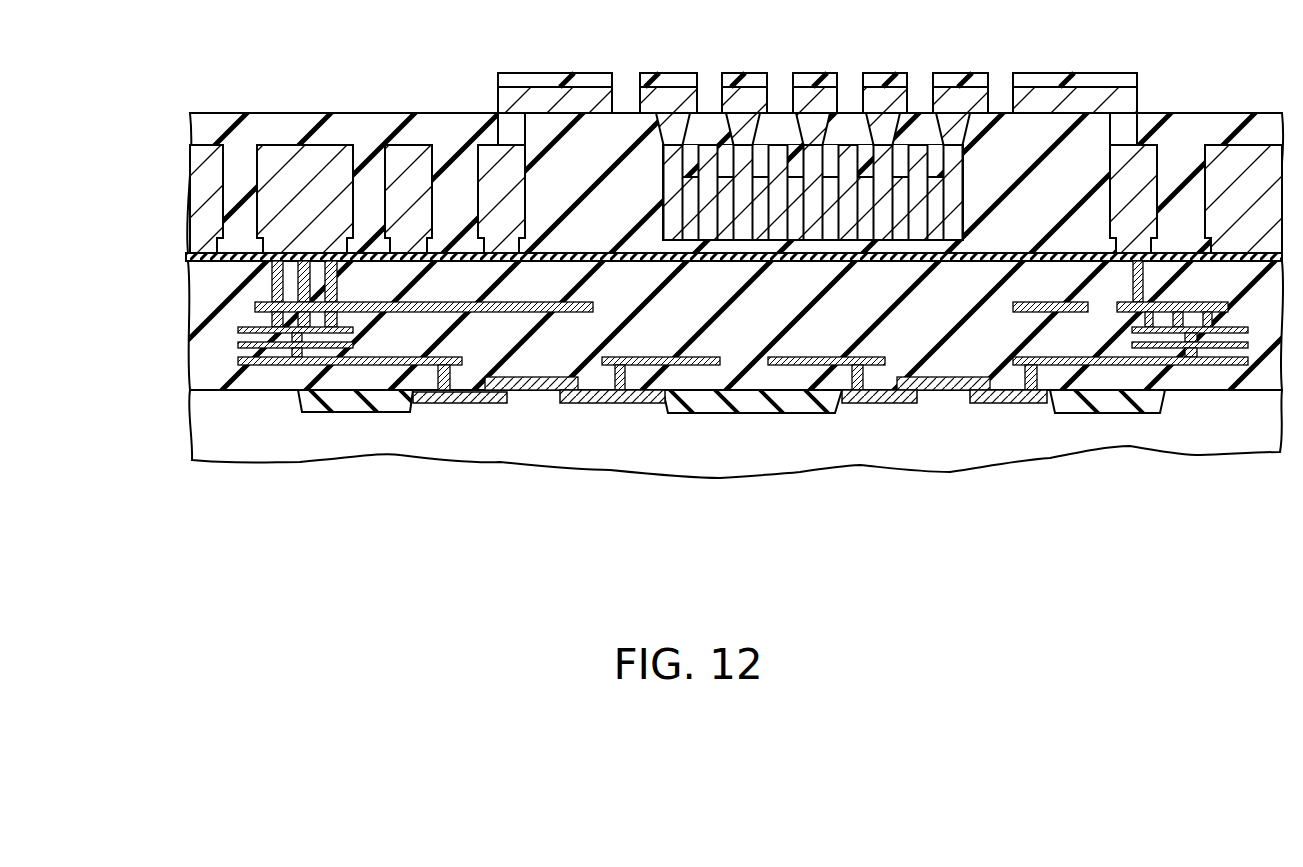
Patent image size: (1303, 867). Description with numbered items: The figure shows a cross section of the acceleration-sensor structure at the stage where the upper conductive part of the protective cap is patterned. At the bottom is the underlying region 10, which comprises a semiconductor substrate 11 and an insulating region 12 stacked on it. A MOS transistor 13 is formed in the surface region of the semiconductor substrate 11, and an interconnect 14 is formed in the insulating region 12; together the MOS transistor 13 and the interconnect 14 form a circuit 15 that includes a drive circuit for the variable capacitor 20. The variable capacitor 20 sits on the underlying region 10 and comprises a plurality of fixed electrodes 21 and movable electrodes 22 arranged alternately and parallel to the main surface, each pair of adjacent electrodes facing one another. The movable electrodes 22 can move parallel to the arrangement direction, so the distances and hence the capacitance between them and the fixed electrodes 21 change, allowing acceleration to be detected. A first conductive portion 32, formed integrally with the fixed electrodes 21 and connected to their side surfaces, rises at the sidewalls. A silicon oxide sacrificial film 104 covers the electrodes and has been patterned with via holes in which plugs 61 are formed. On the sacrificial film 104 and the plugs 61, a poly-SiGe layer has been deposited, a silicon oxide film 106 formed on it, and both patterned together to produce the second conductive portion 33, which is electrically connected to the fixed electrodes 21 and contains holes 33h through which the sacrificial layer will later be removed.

The underlying region 10 is at (128, 305).
The semiconductor substrate 11 is at (175, 393).
The insulating region 12 is at (175, 255).
The MOS transistor 13 is at (533, 403).
The interconnect 14 is at (290, 374).
The circuit 15 is at (253, 510).
The variable capacitor 20 is at (652, 540).
The fixed electrodes 21 is at (673, 234).
The movable electrodes 22 is at (708, 234).
The first conductive portion 32 is at (483, 170).
The second conductive portion 33 is at (967, 97).
The holes 33h is at (779, 78).
The plugs 61 is at (806, 138).
The sacrificial film 104 is at (384, 130).
The silicon oxide film 106 is at (559, 78).